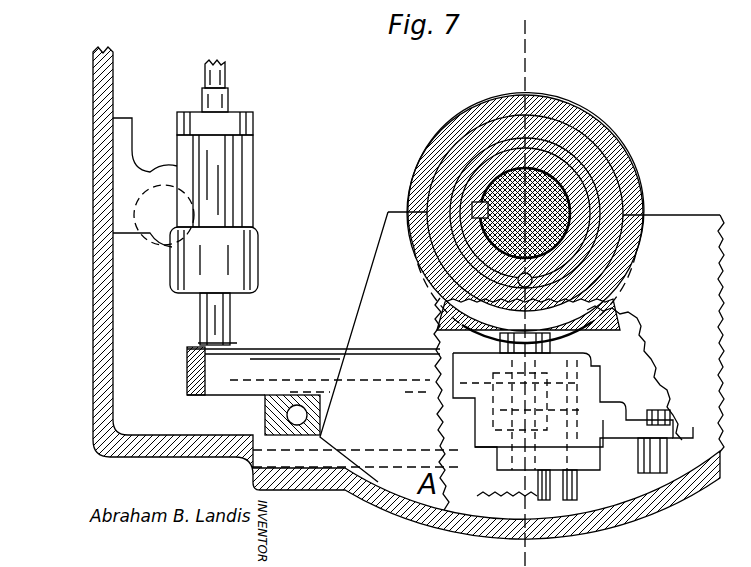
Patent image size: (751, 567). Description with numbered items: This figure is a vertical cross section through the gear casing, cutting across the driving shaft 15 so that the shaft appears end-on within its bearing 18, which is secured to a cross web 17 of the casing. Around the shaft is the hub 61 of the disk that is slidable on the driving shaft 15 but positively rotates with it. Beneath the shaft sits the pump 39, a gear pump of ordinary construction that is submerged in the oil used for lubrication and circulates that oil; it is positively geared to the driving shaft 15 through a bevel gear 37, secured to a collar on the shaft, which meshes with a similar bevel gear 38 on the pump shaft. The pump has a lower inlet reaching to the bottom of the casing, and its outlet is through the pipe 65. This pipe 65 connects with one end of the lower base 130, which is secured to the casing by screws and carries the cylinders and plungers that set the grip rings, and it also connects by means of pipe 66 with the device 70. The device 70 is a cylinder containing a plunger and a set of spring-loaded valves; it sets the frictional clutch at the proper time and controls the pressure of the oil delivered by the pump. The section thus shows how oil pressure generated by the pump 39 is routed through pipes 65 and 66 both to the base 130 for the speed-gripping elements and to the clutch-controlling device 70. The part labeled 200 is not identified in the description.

The driving shaft 15 is at (543, 190).
The cross web 17 is at (579, 362).
The bearing 18 is at (623, 193).
The bevel gear 37 is at (626, 176).
The bevel gear 38 is at (608, 329).
The pump 39 is at (600, 385).
The hub 61 is at (543, 163).
The pipe 65 is at (300, 352).
The pipe 66 is at (230, 318).
The device 70 is at (214, 176).
The lower base 130 is at (270, 415).
The hidden plate 200 is at (358, 460).